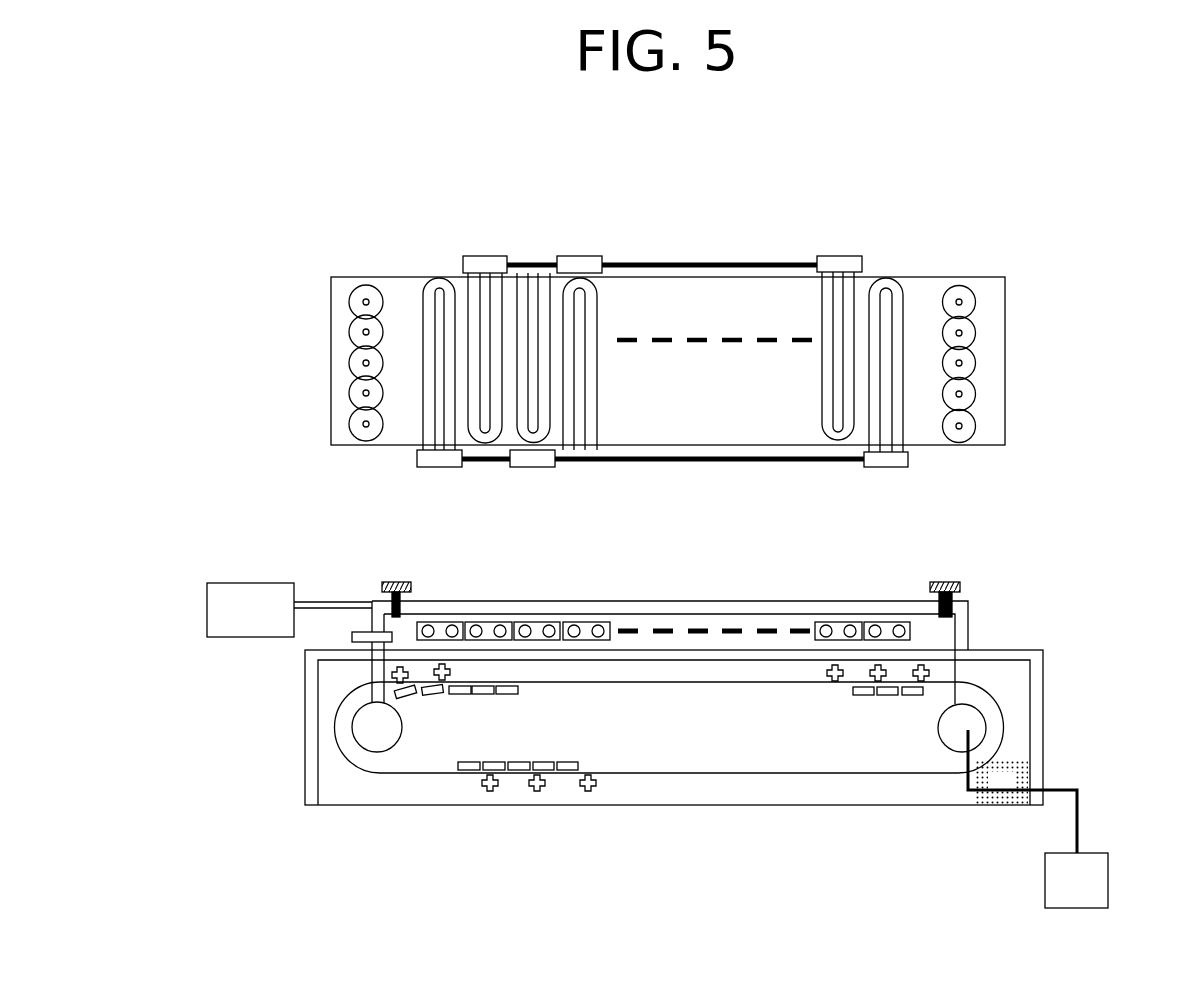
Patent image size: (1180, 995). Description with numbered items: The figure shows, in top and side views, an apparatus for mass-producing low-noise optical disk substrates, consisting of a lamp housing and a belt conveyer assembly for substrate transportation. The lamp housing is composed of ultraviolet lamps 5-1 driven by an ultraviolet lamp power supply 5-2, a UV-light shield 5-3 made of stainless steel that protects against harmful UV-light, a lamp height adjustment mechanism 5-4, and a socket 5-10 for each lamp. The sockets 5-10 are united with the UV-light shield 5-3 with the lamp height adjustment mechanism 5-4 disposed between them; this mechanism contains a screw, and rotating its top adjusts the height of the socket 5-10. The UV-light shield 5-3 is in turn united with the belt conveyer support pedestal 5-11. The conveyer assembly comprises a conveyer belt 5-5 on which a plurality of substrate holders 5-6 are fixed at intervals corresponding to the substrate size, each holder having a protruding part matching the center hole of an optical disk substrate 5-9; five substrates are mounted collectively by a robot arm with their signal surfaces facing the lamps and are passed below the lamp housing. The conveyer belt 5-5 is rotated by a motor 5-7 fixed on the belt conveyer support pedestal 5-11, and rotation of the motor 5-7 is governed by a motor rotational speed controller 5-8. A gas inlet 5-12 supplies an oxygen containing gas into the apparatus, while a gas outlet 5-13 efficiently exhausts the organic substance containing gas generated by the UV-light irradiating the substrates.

In FIG. 5A, the ultraviolet lamp 5-1 is at (427, 278).
In FIG. 5B, the ultraviolet lamp power supply 5-2 is at (223, 583).
In FIG. 5B, the UV-light shield 5-3 is at (865, 601).
In FIG. 5B, the lamp height adjustment mechanism 5-4 is at (960, 586).
In FIG. 5A, the conveyer belt 5-5 is at (1005, 362).
In FIG. 5B, the conveyer belt 5-5 is at (468, 768).
In FIG. 5B, the substrate holder 5-6 is at (932, 675).
In FIG. 5B, the motor 5-7 is at (988, 723).
In FIG. 5B, the motor rotational speed controller 5-8 is at (1045, 872).
In FIG. 5A, the optical disk substrate 5-9 is at (975, 306).
In FIG. 5A, the socket 5-10 is at (829, 622).
In FIG. 5B, the socket 5-10 is at (663, 631).
In FIG. 5B, the belt conveyer support pedestal 5-11 is at (305, 760).
In FIG. 5B, the gas inlet 5-12 is at (352, 635).
In FIG. 5B, the gas outlet 5-13 is at (1022, 777).